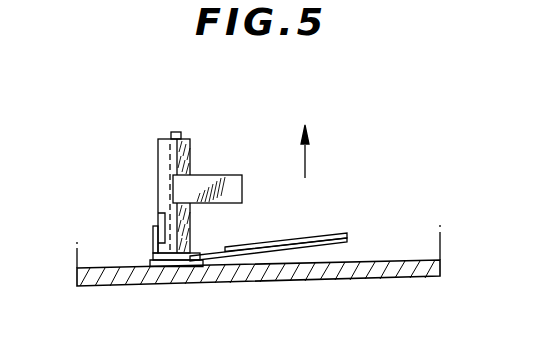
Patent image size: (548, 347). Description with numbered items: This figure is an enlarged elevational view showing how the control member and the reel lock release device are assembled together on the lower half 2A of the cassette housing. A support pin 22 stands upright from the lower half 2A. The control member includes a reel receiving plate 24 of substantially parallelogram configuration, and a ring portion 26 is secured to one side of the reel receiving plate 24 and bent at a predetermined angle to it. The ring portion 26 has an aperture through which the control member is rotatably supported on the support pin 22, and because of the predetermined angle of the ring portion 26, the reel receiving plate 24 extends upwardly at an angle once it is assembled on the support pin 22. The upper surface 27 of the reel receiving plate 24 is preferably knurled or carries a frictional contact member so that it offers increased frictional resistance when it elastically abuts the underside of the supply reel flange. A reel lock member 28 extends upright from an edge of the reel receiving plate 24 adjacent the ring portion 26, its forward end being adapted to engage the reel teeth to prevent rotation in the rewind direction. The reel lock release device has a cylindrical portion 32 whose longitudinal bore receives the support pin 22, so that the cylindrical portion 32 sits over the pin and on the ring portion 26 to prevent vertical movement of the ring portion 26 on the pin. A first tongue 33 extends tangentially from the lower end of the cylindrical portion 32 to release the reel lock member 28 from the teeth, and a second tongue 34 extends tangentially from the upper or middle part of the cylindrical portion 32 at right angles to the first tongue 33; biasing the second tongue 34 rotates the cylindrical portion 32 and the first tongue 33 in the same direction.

The lower half of cassette housing 2A is at (326, 280).
The support pin 22 is at (171, 132).
The reel receiving plate 24 is at (332, 257).
The ring portion 26 is at (158, 266).
The upper surface of reel receiving plate 27 is at (347, 234).
The reel lock member 28 is at (153, 231).
The cylindrical portion 32 is at (188, 160).
The first tongue 33 is at (158, 212).
The second tongue 34 is at (230, 186).